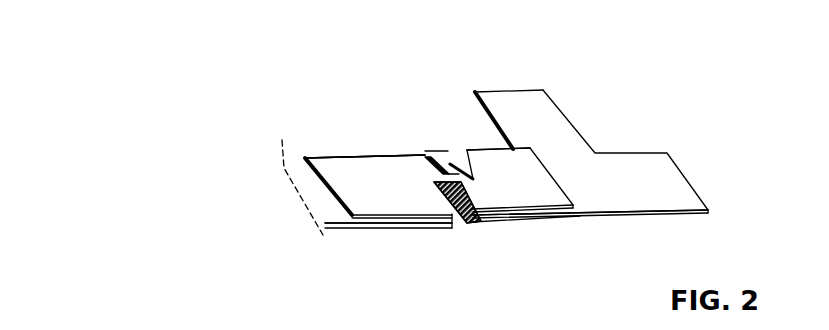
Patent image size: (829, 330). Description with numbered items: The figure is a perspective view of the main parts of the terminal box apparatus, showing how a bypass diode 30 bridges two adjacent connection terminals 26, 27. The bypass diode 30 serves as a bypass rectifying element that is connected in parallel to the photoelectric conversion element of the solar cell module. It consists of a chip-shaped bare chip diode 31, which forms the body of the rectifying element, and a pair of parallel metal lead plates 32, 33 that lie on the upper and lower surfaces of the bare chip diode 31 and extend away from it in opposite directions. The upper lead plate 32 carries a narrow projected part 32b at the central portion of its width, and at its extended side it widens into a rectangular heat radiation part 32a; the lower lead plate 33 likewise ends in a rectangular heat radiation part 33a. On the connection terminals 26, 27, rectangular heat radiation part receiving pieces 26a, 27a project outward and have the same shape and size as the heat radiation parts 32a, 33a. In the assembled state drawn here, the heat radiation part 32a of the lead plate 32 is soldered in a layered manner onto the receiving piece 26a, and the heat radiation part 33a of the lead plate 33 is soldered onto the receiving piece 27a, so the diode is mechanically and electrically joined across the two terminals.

The connection terminal 26 is at (296, 152).
The heat radiation part receiving piece 26a is at (425, 228).
The connection terminal 27 is at (557, 118).
The heat radiation part receiving piece 27a is at (547, 222).
The bypass diode 30 is at (396, 137).
The bare chip diode 31 is at (472, 191).
The upper lead plate 32 is at (378, 205).
The heat radiation part 32a is at (355, 163).
The projected part 32b is at (438, 163).
The lower lead plate 33 is at (561, 189).
The heat radiation part 33a is at (510, 152).